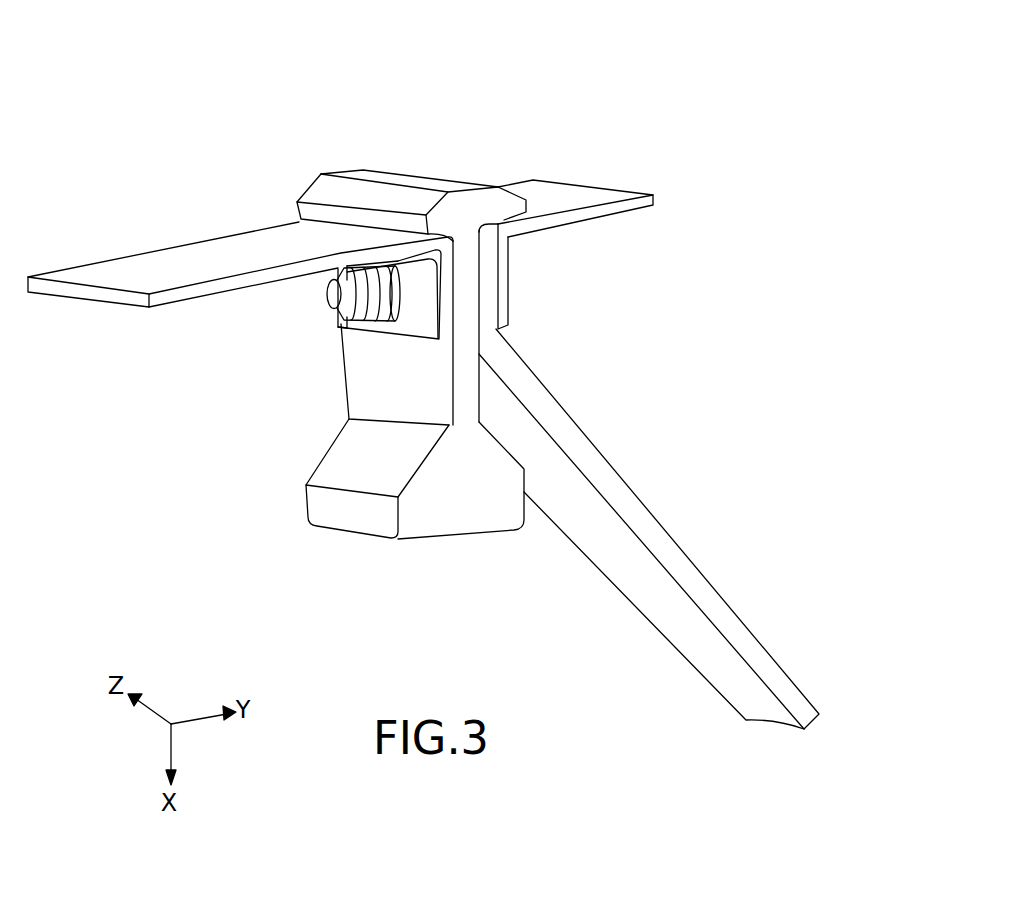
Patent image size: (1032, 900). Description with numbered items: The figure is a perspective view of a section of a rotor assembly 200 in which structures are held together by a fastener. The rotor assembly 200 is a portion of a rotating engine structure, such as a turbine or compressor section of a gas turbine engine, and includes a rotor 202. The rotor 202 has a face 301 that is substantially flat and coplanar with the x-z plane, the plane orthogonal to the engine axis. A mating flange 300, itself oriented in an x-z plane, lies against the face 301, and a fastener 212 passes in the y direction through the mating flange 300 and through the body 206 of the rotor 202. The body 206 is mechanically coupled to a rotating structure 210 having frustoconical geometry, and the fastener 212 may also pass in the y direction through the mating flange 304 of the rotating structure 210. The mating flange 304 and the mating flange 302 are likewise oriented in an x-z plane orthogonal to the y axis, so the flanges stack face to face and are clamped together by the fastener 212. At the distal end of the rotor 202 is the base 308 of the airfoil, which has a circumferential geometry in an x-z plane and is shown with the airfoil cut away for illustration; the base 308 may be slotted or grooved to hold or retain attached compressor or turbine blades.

The rotor assembly 200 is at (620, 68).
The rotor 202 is at (466, 520).
The body 206 is at (407, 362).
The rotating structure 210 is at (505, 363).
The fastener 212 is at (333, 296).
The mating flange 300 is at (343, 323).
The face 301 is at (433, 372).
The mating flange 302 is at (488, 305).
The mating flange 304 is at (470, 288).
The base 308 is at (467, 193).